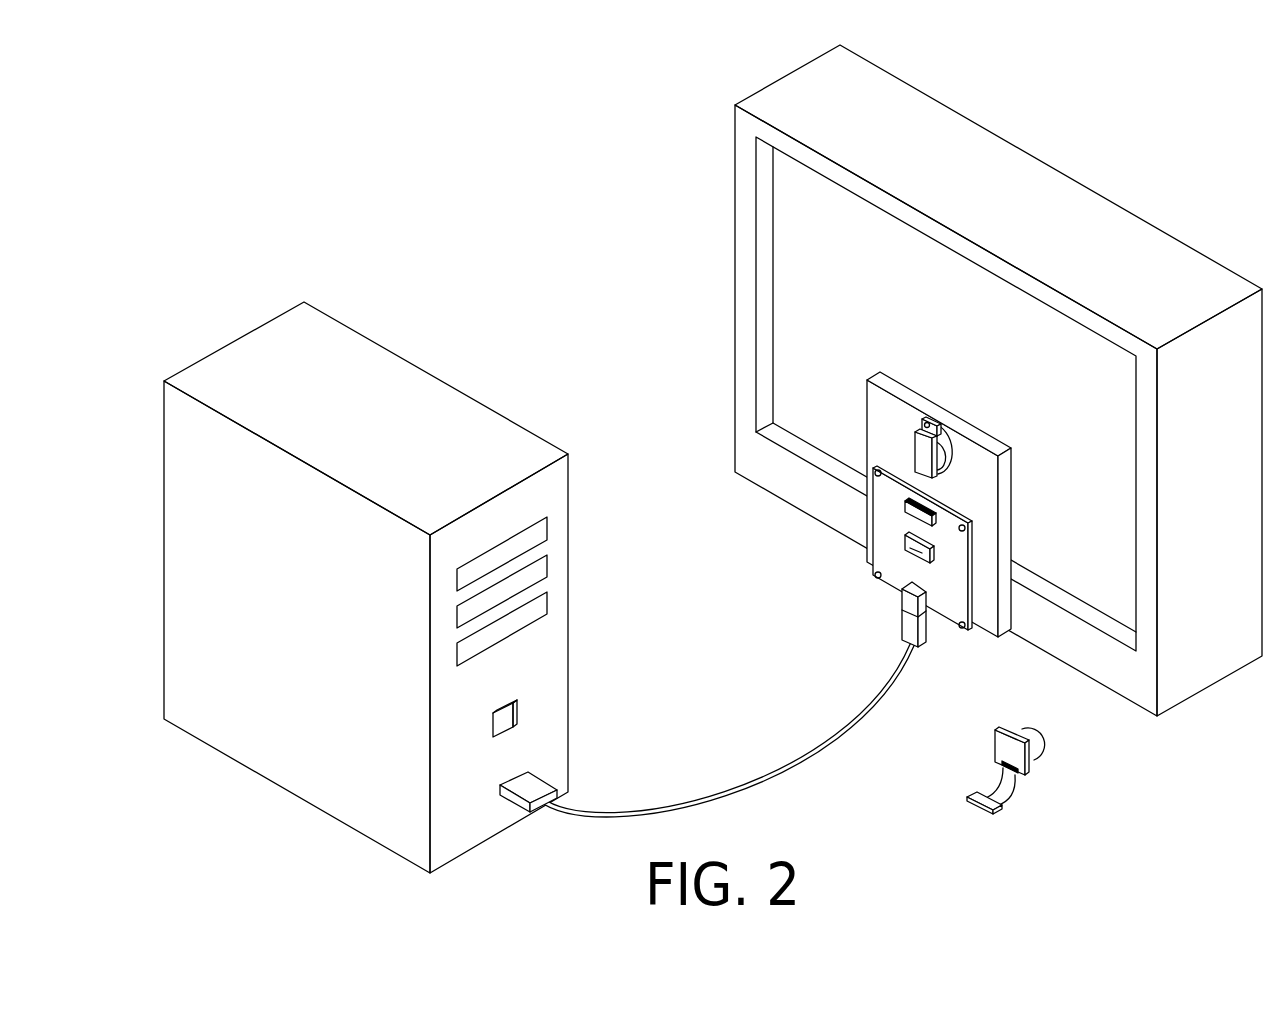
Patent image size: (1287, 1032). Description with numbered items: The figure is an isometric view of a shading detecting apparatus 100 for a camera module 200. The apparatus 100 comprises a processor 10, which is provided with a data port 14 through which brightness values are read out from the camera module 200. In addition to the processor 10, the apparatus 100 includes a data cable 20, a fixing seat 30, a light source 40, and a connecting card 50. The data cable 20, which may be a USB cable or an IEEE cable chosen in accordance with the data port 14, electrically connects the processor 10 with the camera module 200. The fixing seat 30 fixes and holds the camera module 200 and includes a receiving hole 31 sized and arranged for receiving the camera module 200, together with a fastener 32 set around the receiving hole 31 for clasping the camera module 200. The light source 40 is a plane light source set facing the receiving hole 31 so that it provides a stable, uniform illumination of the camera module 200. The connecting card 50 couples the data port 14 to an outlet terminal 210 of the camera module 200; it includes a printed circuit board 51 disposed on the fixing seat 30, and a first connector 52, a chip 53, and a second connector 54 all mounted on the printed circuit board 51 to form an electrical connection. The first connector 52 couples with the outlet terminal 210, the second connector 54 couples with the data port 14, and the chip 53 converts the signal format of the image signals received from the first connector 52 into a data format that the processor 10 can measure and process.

The shading detecting apparatus 100 is at (645, 280).
The processor 10 is at (397, 390).
The data port 14 is at (518, 772).
The data cable 20 is at (810, 760).
The fixing seat 30 is at (1003, 362).
The receiving hole 31 is at (941, 452).
The fastener 32 is at (918, 440).
The light source 40 is at (820, 362).
The connecting card 50 is at (910, 578).
The printed circuit board 51 is at (952, 602).
The first connector 52 is at (932, 520).
The chip 53 is at (918, 544).
The second connector 54 is at (912, 597).
The camera module 200 is at (1030, 770).
The outlet terminal 210 is at (965, 795).